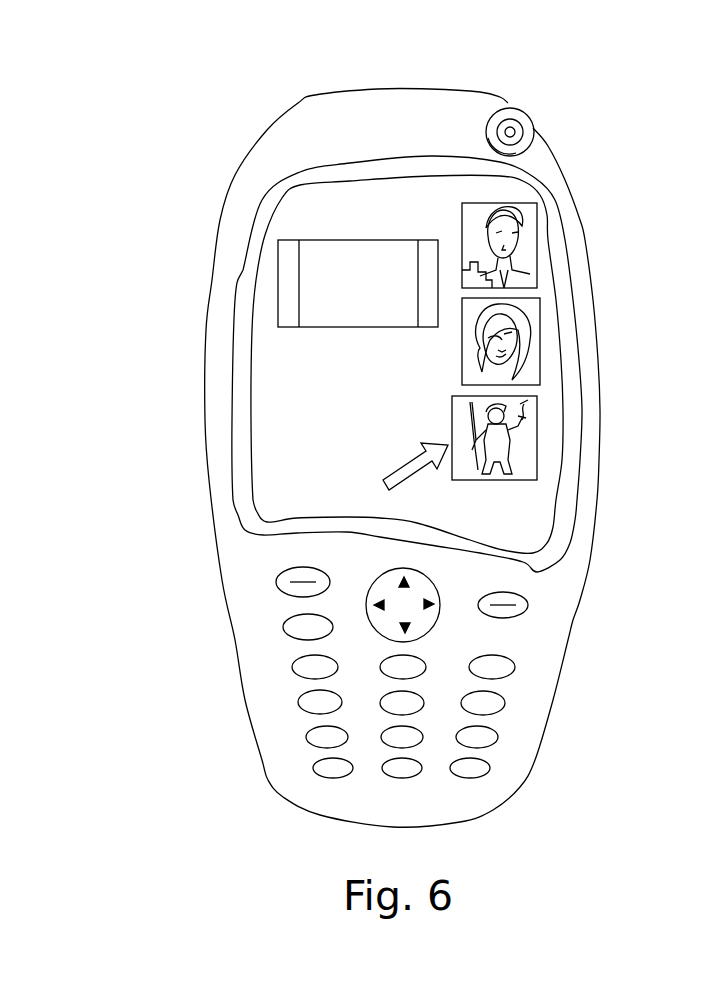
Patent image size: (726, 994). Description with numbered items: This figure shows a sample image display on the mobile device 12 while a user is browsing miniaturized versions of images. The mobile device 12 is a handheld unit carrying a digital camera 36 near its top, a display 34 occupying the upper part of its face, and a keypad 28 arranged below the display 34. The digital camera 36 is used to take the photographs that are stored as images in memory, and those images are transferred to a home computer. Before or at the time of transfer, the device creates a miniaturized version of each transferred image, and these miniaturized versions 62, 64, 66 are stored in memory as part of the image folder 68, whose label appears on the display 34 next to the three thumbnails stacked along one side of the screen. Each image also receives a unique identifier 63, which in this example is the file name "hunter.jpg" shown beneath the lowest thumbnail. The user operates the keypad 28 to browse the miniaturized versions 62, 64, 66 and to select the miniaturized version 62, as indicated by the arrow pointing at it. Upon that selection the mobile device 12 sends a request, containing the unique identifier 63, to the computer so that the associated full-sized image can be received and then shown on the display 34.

The mobile device 12 is at (510, 82).
The digital camera 36 is at (527, 130).
The display 34 is at (270, 470).
The image folder 68 is at (303, 266).
The miniaturized version 66 is at (522, 228).
The miniaturized version 64 is at (537, 322).
The miniaturized version 62 is at (525, 456).
The unique identifier 63 is at (550, 493).
The keypad 28 is at (453, 650).